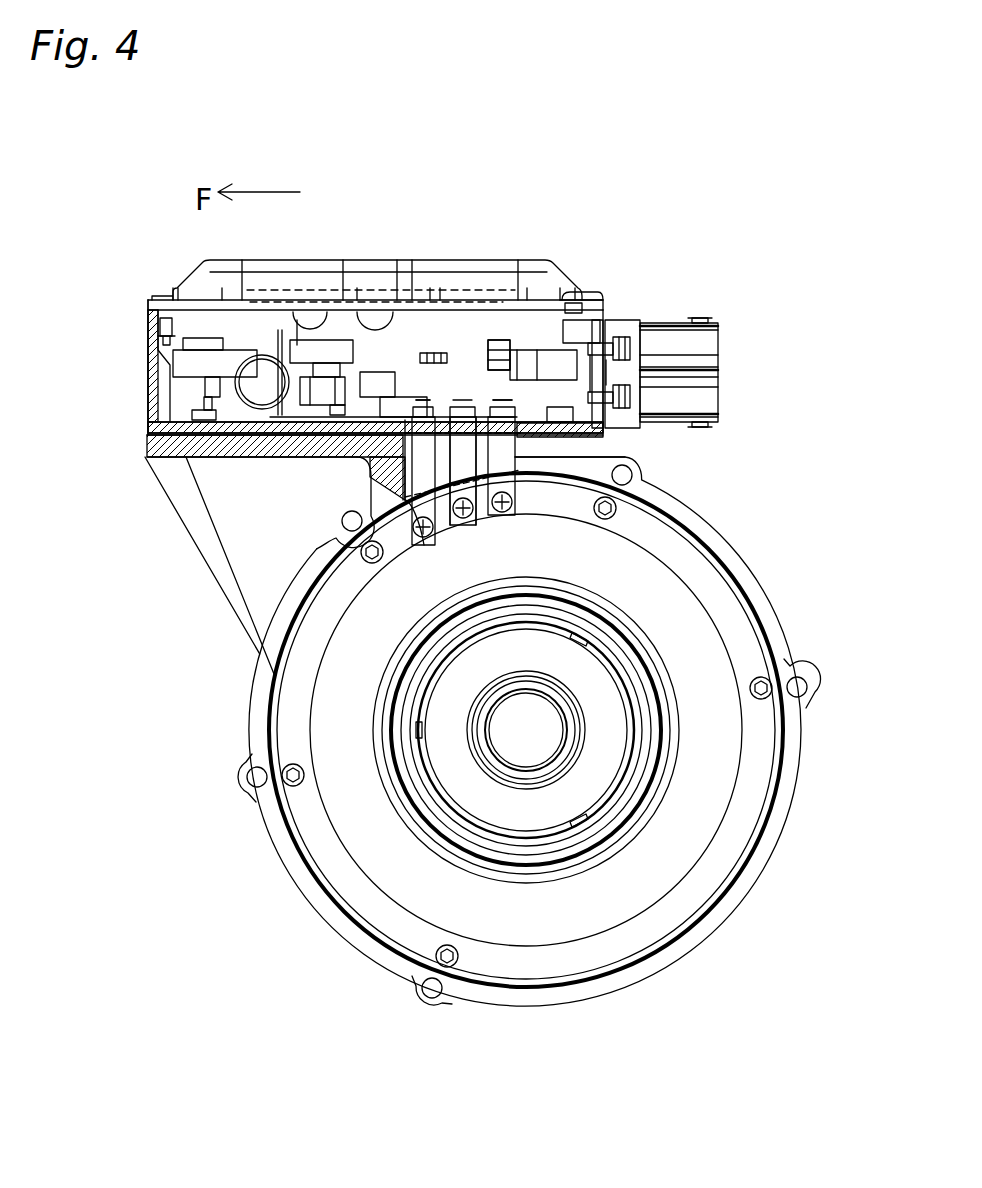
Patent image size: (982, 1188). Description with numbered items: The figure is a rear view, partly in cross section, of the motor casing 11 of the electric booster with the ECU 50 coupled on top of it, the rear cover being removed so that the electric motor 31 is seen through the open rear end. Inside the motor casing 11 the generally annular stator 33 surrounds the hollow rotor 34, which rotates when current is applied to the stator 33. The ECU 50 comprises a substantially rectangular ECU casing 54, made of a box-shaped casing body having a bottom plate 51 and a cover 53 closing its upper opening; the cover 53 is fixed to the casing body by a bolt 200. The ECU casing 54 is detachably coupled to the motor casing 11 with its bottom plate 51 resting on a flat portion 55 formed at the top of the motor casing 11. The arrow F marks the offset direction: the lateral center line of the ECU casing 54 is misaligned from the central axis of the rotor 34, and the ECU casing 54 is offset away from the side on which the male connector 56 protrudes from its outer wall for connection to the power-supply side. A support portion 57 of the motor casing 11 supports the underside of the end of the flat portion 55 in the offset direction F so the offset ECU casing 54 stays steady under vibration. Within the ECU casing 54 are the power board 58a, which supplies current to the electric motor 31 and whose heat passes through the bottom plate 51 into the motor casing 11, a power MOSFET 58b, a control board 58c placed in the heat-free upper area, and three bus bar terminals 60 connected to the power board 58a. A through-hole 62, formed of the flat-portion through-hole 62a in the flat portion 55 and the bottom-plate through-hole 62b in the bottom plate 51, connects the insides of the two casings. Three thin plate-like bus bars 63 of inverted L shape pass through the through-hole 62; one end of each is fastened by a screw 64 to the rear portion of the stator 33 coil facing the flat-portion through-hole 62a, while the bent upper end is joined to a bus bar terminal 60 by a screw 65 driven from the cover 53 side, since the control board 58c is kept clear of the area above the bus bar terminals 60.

The motor casing 11 is at (748, 879).
The electric motor 31 is at (378, 935).
The stator 33 is at (333, 875).
The rotor 34 is at (548, 870).
The ECU 50 is at (608, 286).
The bottom plate 51 is at (240, 410).
The cover 53 is at (210, 268).
The ECU casing 54 is at (130, 410).
The flat portion 55 is at (215, 445).
The connector 56 is at (700, 342).
The support portion 57 is at (230, 575).
The power board 58a is at (273, 423).
The power MOSFET 58b is at (330, 423).
The control board 58c is at (322, 300).
The bus bar terminals 60 is at (487, 423).
The through-hole 62 is at (440, 468).
The flat-portion through-hole 62a is at (520, 447).
The bottom-plate through-hole 62b is at (448, 443).
The bus bars 63 is at (560, 463).
The screw 64 is at (437, 537).
The screw 65 is at (425, 407).
The bolt 200 is at (155, 300).